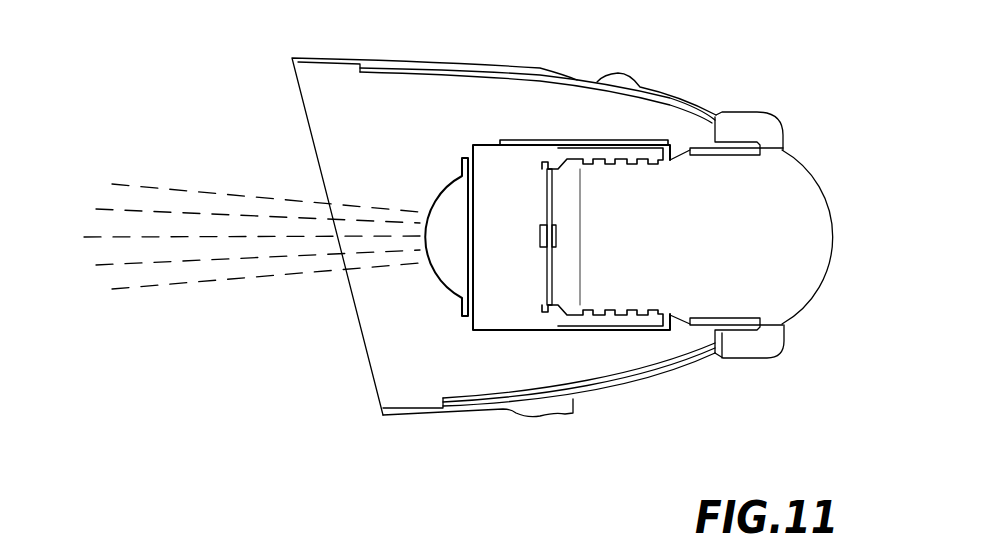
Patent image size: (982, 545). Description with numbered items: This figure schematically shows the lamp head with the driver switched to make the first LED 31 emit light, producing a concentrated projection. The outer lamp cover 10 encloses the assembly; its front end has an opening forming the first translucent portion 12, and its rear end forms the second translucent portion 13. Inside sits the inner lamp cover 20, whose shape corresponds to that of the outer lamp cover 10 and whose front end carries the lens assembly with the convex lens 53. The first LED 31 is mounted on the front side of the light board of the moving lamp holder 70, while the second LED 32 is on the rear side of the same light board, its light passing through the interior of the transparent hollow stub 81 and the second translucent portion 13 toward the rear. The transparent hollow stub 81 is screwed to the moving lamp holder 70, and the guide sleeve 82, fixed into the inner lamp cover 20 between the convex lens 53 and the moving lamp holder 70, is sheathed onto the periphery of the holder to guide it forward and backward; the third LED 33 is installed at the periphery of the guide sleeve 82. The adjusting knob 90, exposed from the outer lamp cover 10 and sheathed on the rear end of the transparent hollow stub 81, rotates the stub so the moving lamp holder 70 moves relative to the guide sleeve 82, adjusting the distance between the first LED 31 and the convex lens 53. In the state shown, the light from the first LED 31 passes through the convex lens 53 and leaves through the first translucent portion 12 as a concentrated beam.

The outer lamp cover 10 is at (313, 56).
The first translucent portion 12 is at (305, 106).
The second translucent portion 13 is at (827, 200).
The inner lamp cover 20 is at (408, 68).
The first LED 31 is at (543, 238).
The second LED 32 is at (558, 234).
The third LED 33 is at (533, 139).
The convex lens 53 is at (433, 203).
The moving lamp holder 70 is at (628, 330).
The transparent hollow stub 81 is at (673, 318).
The guide sleeve 82 is at (503, 332).
The adjusting knob 90 is at (762, 112).